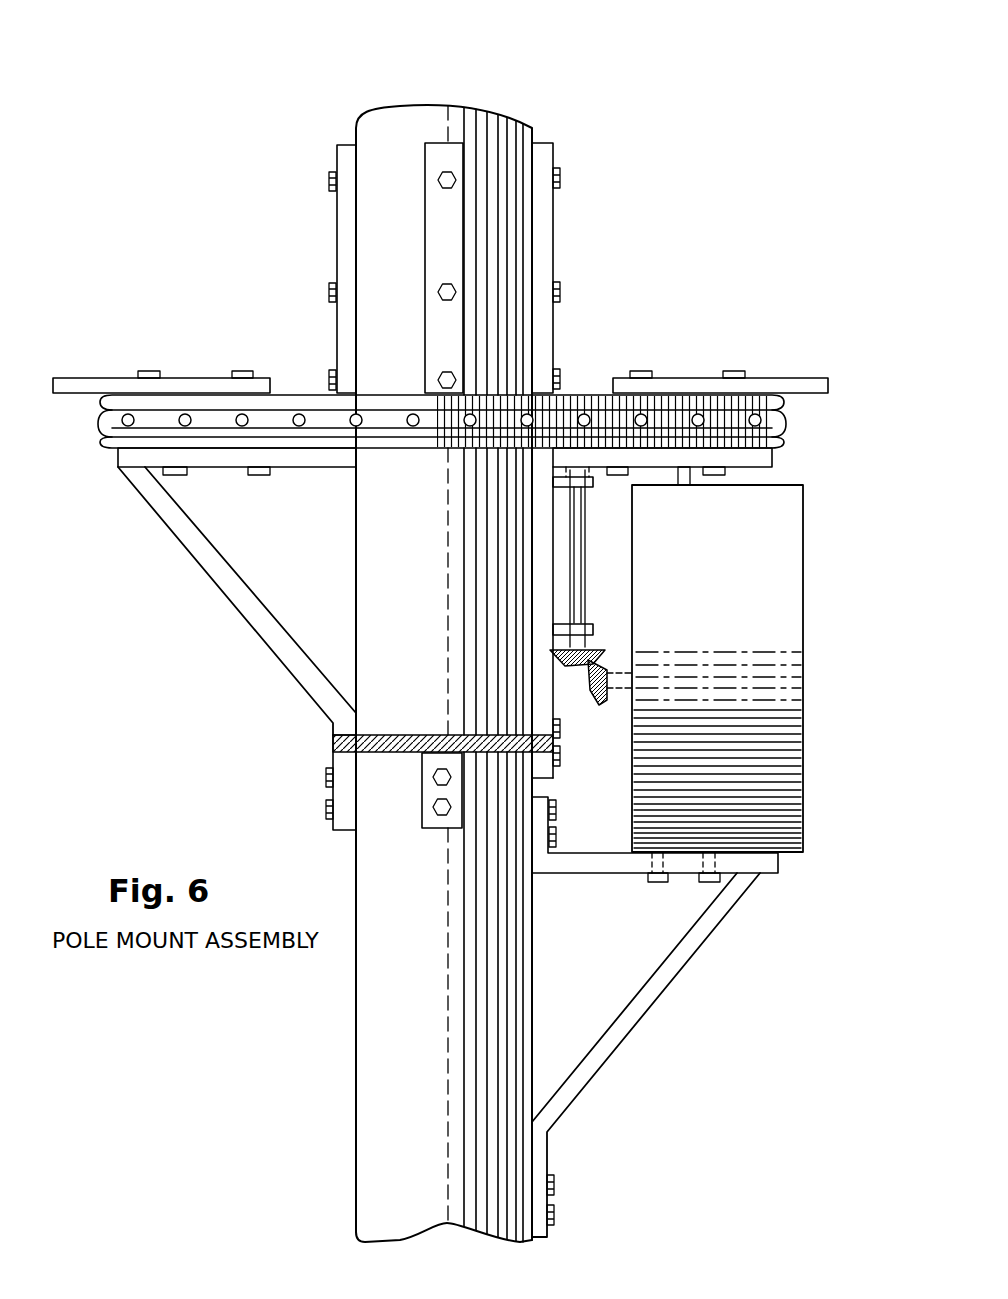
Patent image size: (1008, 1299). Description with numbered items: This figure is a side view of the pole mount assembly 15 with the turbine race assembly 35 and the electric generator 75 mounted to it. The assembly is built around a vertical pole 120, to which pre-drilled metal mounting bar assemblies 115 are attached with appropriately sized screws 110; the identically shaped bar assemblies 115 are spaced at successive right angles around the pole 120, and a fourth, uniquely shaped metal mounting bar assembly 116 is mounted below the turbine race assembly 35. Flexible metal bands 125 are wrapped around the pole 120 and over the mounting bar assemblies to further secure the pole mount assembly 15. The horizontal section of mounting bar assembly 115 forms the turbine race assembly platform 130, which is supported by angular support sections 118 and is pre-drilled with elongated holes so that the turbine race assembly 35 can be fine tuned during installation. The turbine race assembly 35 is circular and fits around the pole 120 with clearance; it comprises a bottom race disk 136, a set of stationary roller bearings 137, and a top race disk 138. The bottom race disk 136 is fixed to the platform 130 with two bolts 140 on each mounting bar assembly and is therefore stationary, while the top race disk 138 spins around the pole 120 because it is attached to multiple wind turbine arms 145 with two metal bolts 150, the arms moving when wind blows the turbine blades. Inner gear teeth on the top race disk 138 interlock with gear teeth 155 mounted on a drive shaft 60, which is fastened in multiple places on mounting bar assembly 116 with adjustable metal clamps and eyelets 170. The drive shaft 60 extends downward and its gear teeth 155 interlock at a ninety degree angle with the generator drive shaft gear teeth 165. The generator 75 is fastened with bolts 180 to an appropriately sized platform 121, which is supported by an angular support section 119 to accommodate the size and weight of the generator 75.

The pole mount assembly 15 is at (606, 92).
The turbine race assembly 35 is at (790, 398).
The drive shaft 60 is at (586, 572).
The generator 75 is at (797, 532).
The screws 110 is at (329, 181).
The metal mounting bar assemblies 115 is at (437, 141).
The metal mounting bar assembly 116 is at (565, 154).
The angular support sections 118 is at (430, 530).
The angular support section 119 is at (655, 955).
The pole 120 is at (518, 125).
The platform 121 is at (570, 873).
The flexible metal bands 125 is at (385, 753).
The turbine race assembly platform 130 is at (420, 456).
The bottom race disk 136 is at (108, 445).
The stationary roller bearings 137 is at (104, 422).
The top race disk 138 is at (104, 400).
The bolts 140 is at (187, 473).
The wind turbine arms 145 is at (112, 378).
The metal bolts 150 is at (150, 371).
The gear teeth 155 is at (578, 668).
The generator drive shaft gear teeth 165 is at (598, 660).
The adjustable metal clamps and eyelets 170 is at (596, 486).
The bolts 180 is at (710, 882).